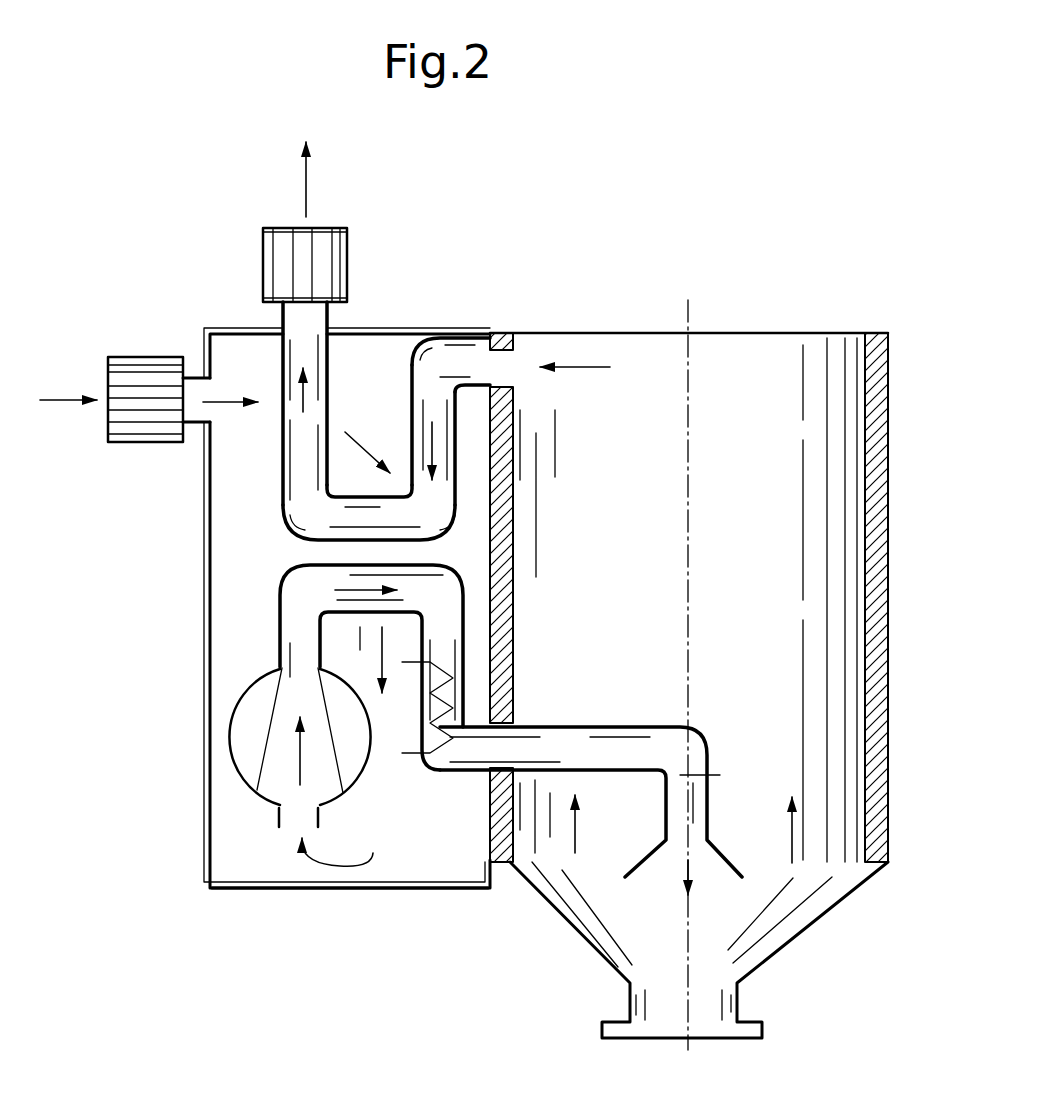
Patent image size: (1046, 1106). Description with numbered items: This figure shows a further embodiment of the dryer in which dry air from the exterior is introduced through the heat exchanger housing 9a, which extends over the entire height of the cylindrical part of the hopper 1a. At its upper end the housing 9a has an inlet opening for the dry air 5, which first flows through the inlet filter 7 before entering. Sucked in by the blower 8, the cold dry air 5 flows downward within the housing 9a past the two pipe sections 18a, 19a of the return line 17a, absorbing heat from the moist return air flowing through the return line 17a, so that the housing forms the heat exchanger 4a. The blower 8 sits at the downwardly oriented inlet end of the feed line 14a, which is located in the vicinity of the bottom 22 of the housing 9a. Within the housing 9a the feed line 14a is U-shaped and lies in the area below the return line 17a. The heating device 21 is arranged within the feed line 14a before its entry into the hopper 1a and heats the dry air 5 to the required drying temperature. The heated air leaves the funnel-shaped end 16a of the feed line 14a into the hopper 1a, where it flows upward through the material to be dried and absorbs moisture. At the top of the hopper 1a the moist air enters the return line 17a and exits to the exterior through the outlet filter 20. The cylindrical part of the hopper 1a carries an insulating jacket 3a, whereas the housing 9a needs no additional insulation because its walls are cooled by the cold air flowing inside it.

The hopper 1a is at (727, 377).
The insulating jacket 3a is at (493, 543).
The heat exchanger 4a is at (358, 400).
The dry air 5 is at (62, 398).
The inlet filter 7 is at (138, 417).
The blower 8 is at (278, 758).
The heat exchanger housing 9a is at (207, 523).
The feed line 14a is at (305, 627).
The funnel-shaped end 16a is at (635, 862).
The return line 17a is at (435, 390).
The pipe section 18a is at (440, 448).
The pipe section 19a is at (300, 445).
The outlet filter 20 is at (322, 255).
The heating device 21 is at (440, 717).
The bottom 22 is at (383, 890).